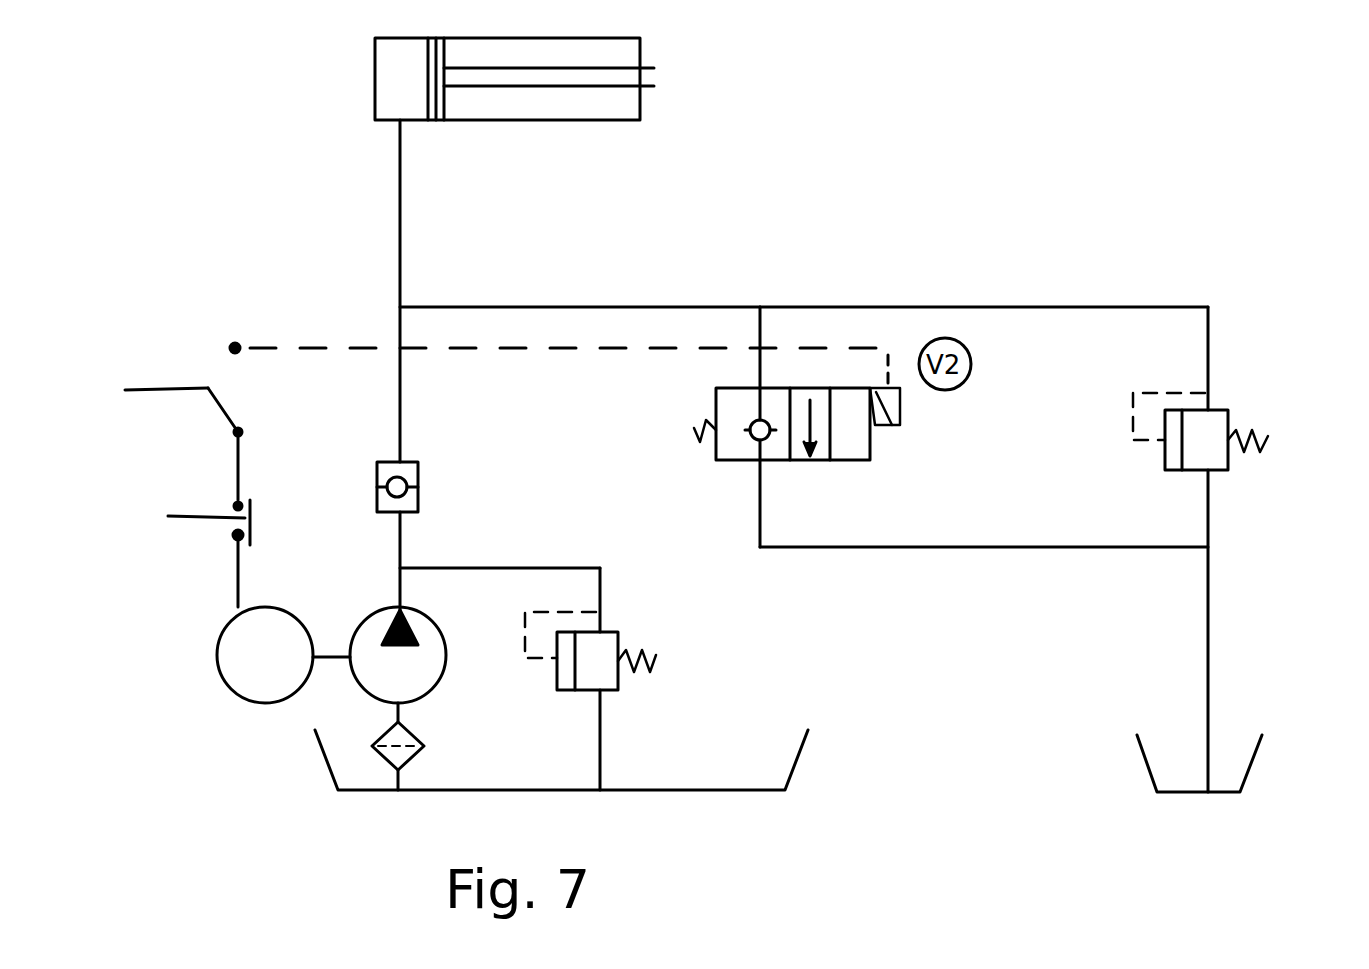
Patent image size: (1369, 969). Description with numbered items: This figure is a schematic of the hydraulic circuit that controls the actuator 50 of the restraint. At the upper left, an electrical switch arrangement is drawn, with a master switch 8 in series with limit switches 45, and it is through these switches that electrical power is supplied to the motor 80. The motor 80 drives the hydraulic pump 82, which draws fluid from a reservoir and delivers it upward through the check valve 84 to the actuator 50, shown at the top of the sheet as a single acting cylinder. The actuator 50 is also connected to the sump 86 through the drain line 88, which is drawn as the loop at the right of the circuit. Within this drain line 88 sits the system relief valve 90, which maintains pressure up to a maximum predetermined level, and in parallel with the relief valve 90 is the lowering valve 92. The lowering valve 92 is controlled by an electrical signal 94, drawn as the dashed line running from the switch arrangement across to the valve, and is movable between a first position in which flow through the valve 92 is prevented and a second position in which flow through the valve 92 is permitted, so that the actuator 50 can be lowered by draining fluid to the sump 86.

The switch 8 is at (205, 370).
The limit switches 45 is at (188, 538).
The actuator 50 is at (521, 125).
The motor 80 is at (245, 700).
The hydraulic pump 82 is at (412, 673).
The check valve 84 is at (420, 487).
The sump 86 is at (1145, 758).
The drain line 88 is at (1005, 305).
The system relief valve 90 is at (1228, 478).
The lowering valve 92 is at (815, 470).
The electrical signal 94 is at (643, 348).